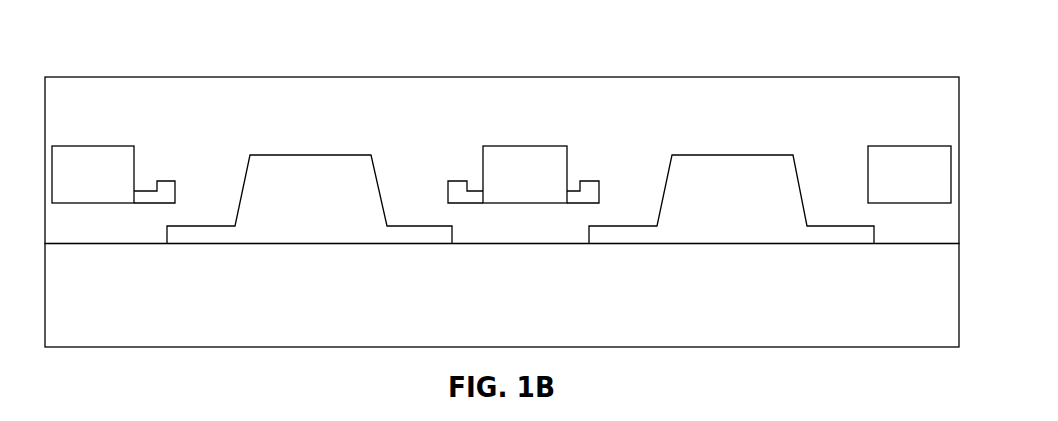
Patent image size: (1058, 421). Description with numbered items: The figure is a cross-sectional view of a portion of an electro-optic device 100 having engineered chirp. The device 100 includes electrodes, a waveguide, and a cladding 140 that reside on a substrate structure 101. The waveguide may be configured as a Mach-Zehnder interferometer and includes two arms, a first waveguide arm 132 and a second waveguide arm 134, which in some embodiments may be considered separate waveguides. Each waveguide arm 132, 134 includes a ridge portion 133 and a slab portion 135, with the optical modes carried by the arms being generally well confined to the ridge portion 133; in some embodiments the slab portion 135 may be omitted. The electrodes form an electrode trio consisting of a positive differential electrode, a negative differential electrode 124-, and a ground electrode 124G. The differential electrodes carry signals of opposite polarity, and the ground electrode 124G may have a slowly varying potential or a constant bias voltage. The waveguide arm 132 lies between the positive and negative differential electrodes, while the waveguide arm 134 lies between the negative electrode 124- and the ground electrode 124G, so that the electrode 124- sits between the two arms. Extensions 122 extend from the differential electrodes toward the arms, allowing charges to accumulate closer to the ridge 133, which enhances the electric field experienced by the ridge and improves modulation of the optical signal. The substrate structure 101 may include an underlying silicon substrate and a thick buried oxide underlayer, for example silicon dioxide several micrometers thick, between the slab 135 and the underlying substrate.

The electro-optic device 100 is at (503, 19).
The substrate structure 101 is at (767, 306).
The extensions 122 is at (175, 181).
The negative differential electrode 124- is at (548, 187).
The ground electrode 124G is at (938, 187).
The waveguide arm 132 is at (329, 217).
The ridge portion 133 is at (342, 132).
The waveguide arm 134 is at (750, 217).
The slab portion 135 is at (212, 208).
The cladding 140 is at (442, 109).